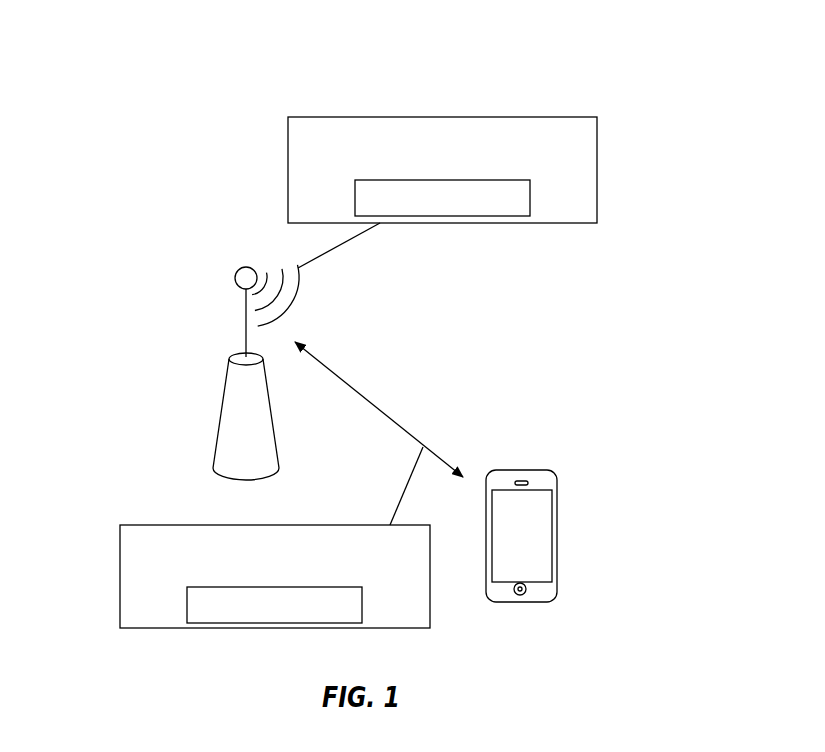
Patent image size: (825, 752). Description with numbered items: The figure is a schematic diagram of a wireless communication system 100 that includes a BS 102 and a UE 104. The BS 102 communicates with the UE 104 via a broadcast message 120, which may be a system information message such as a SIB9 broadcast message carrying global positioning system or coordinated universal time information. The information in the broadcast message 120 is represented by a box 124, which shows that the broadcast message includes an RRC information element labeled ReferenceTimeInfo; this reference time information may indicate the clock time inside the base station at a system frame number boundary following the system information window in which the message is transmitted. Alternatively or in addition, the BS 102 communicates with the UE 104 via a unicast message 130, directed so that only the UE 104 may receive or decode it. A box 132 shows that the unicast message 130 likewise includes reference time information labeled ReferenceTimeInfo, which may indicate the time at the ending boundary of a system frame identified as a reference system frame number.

The wireless communication system 100 is at (789, 78).
The BS 102 is at (228, 425).
The UE 104 is at (568, 462).
The broadcast message 120 is at (297, 298).
The box 124 is at (598, 153).
The unicast message 130 is at (373, 407).
The box 132 is at (280, 525).